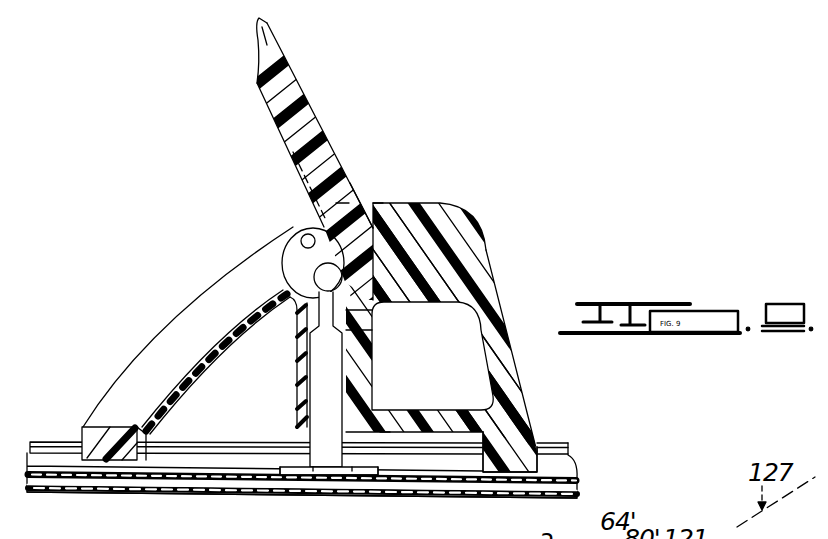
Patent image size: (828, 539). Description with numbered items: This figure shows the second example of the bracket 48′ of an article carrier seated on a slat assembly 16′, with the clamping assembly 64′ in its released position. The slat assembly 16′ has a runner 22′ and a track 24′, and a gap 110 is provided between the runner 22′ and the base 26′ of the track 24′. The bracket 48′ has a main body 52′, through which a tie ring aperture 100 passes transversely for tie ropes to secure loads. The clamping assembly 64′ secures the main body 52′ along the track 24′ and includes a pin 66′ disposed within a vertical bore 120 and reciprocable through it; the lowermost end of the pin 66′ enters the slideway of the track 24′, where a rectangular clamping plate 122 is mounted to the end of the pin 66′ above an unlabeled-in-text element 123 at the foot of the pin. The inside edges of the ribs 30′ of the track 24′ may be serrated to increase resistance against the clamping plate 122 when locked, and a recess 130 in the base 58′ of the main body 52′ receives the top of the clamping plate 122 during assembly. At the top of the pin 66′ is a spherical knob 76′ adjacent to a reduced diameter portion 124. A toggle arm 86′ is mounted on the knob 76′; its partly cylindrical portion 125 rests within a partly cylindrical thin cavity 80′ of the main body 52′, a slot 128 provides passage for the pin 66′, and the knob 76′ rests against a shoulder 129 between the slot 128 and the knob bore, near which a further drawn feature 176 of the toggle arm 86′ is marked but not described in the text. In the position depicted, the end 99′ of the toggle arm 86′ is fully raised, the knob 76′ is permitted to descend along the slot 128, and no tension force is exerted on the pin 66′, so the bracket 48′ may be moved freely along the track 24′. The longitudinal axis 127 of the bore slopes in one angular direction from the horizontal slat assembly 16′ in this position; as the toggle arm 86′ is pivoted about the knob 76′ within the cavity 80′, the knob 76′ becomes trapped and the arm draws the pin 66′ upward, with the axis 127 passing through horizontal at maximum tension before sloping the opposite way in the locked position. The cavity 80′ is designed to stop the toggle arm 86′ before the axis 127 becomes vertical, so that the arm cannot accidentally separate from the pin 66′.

The end of the toggle arm 99′ is at (267, 25).
The toggle arm 86′ is at (308, 119).
The clamping assembly 64′ is at (354, 164).
The holder edge 176 is at (349, 203).
The partly cylindrical thin cavity 80′ is at (377, 216).
The bracket 48′ is at (470, 228).
The main body 52′ is at (493, 262).
The longitudinal axis of the bore 127 is at (290, 158).
The shoulder 129 is at (301, 234).
The partly cylindrical portion 125 is at (292, 246).
The slot 128 is at (293, 250).
The knob 76′ is at (296, 290).
The pin 66′ is at (320, 368).
The ribs of the track 30′ is at (197, 448).
The reduced diameter portion 124 is at (372, 310).
The vertical bore 120 is at (372, 330).
The tie ring aperture 100 is at (452, 377).
The recess 130 is at (386, 441).
The base of the main body 58′ is at (445, 440).
The slat assembly 16′ is at (561, 445).
The runner 22′ is at (157, 492).
The gap 110 is at (222, 486).
The column base 123 is at (312, 480).
The clamping plate 122 is at (348, 486).
The base of the track 26′ is at (417, 486).
The track 24′ is at (470, 487).